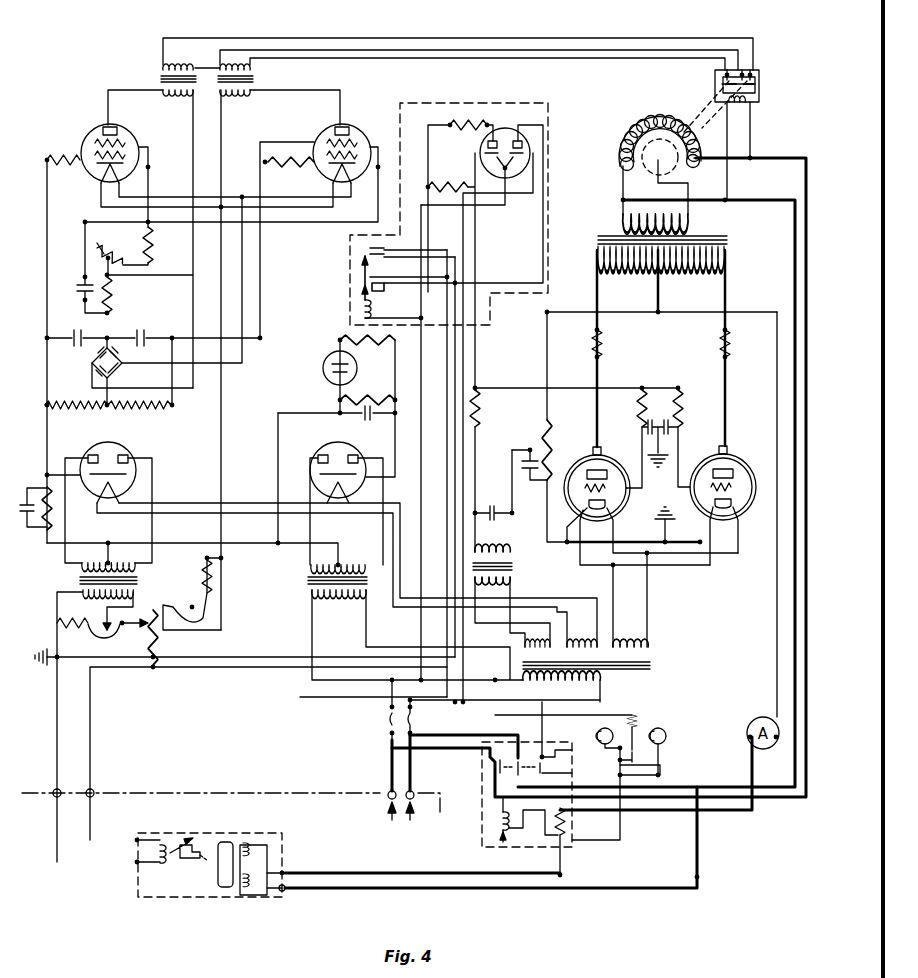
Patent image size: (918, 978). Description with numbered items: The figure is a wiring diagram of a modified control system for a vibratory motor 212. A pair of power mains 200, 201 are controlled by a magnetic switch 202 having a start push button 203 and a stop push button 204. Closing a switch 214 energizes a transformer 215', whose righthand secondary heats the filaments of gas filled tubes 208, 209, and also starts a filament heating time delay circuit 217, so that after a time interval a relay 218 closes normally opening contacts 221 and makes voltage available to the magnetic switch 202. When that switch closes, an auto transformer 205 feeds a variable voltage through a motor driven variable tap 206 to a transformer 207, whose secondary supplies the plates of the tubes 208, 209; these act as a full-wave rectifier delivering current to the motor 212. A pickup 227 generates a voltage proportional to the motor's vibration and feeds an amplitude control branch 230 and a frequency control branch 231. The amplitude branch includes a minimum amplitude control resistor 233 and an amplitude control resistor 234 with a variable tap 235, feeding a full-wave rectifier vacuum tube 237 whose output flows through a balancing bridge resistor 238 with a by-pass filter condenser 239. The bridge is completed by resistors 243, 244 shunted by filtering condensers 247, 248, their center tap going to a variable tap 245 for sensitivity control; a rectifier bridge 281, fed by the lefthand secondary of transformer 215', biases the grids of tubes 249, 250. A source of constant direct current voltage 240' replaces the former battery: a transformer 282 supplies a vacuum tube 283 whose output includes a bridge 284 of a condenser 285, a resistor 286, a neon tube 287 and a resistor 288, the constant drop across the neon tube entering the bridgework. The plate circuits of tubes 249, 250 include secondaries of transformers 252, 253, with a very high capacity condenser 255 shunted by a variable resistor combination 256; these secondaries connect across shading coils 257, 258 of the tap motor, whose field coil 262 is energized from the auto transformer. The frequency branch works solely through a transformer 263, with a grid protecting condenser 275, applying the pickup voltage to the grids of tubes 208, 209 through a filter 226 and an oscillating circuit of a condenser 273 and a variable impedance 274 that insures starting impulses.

The power main 200 is at (388, 770).
The power main 201 is at (412, 770).
The magnetic switch 202 is at (495, 804).
The start push button 203 is at (634, 752).
The stop push button 204 is at (625, 771).
The auto transformer 205 is at (644, 112).
The motor driven variable tap 206 is at (668, 160).
The transformer 207 is at (608, 232).
The gas filled tube 208 is at (608, 456).
The gas filled tube 209 is at (733, 454).
The vibratory motor 212 is at (248, 897).
The switch 214 is at (385, 720).
The transformer 215' is at (605, 657).
The filament heating time delay circuit 217 is at (549, 117).
The relay 218 is at (357, 314).
The normally opening contacts 221 is at (370, 251).
The filter 226 is at (651, 405).
The pickup 227 is at (178, 867).
The amplitude control branch 230 is at (118, 655).
The frequency control branch 231 is at (497, 652).
The adjustable minimum amplitude control resistor 233 is at (160, 640).
The amplitude control resistor 234 is at (98, 637).
The variable tap 235 is at (100, 626).
The full-wave rectifier vacuum tube 237 is at (125, 452).
The balancing bridge resistor 238 is at (52, 508).
The by-pass filter condenser 239 is at (30, 522).
The source of constant direct current voltage 240' is at (298, 394).
The resistor 243 is at (78, 400).
The resistor 244 is at (125, 410).
The variable tap 245 is at (192, 608).
The filtering condenser 247 is at (72, 330).
The filtering condenser 248 is at (148, 334).
The tube 249 is at (92, 130).
The tube 250 is at (318, 132).
The transformer 252 is at (160, 74).
The transformer 253 is at (254, 80).
The very high capacity condenser 255 is at (82, 283).
The variable resistor combination 256 is at (100, 243).
The shading coil 257 is at (726, 68).
The shading coil 258 is at (751, 76).
The field coil 262 is at (745, 104).
The transformer 263 is at (516, 576).
The condenser 273 is at (525, 458).
The variable impedance 274 is at (549, 452).
The grid protecting condenser 275 is at (492, 505).
The full-wave rectifier bridge 281 is at (118, 370).
The transformer 282 is at (308, 584).
The vacuum tube 283 is at (326, 452).
The bridge 284 is at (350, 370).
The condenser 285 is at (372, 418).
The resistor 286 is at (352, 400).
The neon tube 287 is at (323, 363).
The resistor 288 is at (338, 340).